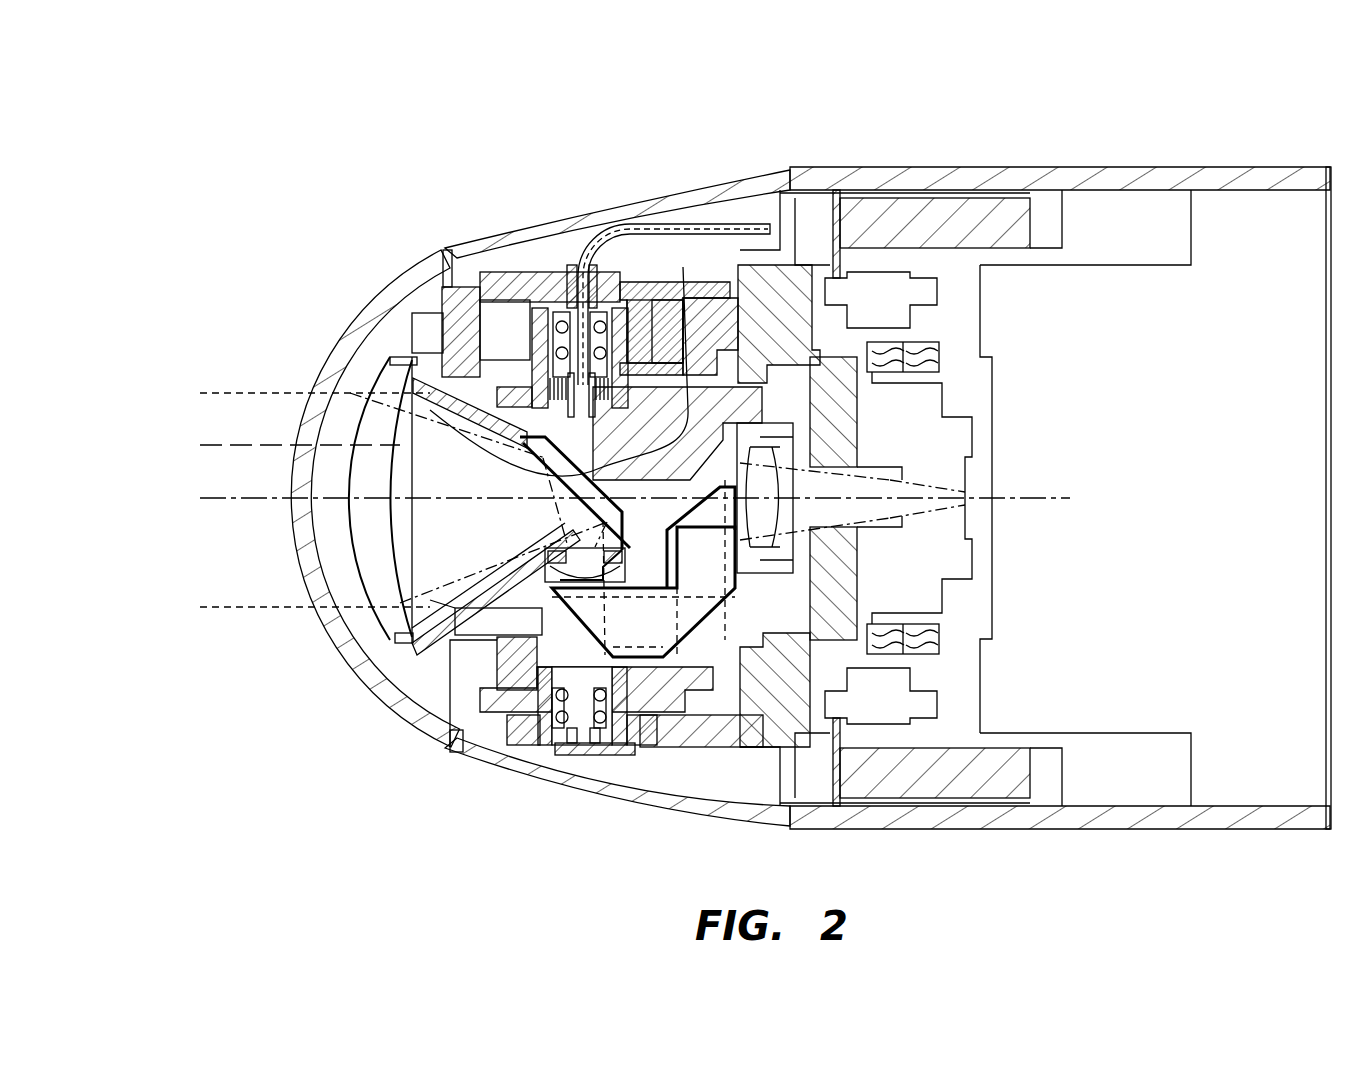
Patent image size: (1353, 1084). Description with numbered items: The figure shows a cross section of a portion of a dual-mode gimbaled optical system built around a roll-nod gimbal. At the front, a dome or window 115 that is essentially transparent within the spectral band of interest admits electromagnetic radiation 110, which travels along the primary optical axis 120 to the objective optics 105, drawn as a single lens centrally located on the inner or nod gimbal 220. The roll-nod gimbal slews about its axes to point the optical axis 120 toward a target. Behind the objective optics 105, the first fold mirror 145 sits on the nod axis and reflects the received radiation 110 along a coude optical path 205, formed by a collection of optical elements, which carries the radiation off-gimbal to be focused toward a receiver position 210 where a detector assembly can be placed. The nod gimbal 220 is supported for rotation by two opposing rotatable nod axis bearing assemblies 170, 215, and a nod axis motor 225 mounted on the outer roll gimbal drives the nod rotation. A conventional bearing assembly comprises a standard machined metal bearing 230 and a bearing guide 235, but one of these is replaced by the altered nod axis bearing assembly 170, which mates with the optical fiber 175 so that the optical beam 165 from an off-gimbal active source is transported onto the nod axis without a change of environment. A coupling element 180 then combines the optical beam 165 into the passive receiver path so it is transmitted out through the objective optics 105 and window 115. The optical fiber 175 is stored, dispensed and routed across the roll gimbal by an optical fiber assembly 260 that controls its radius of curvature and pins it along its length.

The objective optics 105 is at (382, 627).
The electromagnetic radiation 110 is at (265, 392).
The front dome or window 115 is at (357, 325).
The primary optical axis 120 is at (223, 500).
The first fold mirror 145 is at (398, 423).
The optical beam 165 is at (200, 445).
The nod axis bearing assembly 170 is at (540, 262).
The optical fiber 175 is at (693, 223).
The coupling element 180 is at (680, 440).
The coude optical path 205 is at (703, 647).
The receiver position 210 is at (965, 478).
The nod axis bearing assembly 215 is at (545, 752).
The inner or nod gimbal 220 is at (443, 250).
The nod axis motor 225 is at (725, 285).
The bearing 230 is at (598, 745).
The bearing guide 235 is at (600, 748).
The optical fiber assembly 260 is at (1010, 797).